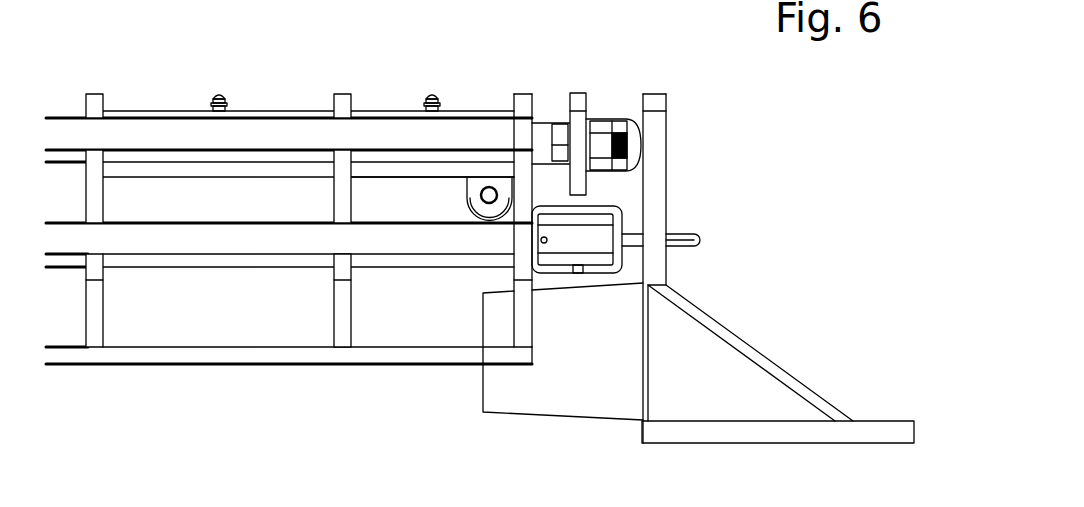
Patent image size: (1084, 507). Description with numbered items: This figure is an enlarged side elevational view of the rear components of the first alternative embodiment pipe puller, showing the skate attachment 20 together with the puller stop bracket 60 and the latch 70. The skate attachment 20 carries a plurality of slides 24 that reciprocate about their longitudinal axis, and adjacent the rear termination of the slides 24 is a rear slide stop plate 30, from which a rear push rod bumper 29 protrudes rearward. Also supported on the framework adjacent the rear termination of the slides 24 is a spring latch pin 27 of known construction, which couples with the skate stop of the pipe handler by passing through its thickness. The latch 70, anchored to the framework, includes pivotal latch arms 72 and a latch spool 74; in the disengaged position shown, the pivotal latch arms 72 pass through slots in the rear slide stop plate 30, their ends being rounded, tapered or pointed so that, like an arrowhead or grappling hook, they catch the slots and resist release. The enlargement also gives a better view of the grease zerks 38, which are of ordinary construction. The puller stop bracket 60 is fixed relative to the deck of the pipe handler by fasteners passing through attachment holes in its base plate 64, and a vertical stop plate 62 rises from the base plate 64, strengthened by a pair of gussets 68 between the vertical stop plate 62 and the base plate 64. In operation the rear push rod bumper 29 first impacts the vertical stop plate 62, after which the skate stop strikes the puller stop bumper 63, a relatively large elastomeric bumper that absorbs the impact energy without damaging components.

The skate attachment 20 is at (291, 102).
The grease zerks 38 is at (432, 93).
The slides 24 is at (543, 128).
The rear slide stop plate 30 is at (578, 93).
The rear push rod bumper 29 is at (628, 118).
The vertical stop plate 62 is at (657, 140).
The pivotal latch arms 72 is at (488, 211).
The spring latch pin 27 is at (707, 240).
The latch 70 is at (442, 192).
The latch spool 74 is at (463, 195).
The puller stop bumper 63 is at (557, 400).
The gussets 68 is at (700, 348).
The puller stop bracket 60 is at (801, 268).
The base plate 64 is at (888, 425).